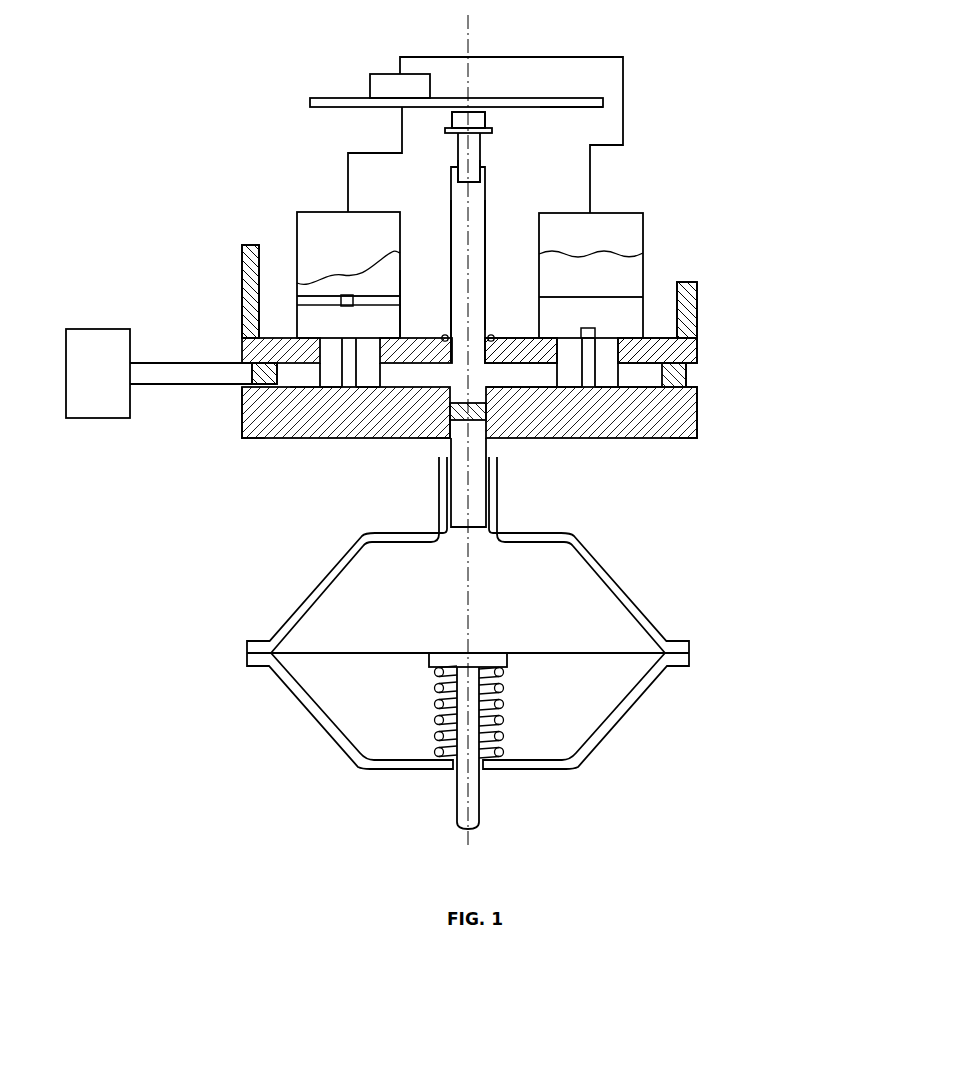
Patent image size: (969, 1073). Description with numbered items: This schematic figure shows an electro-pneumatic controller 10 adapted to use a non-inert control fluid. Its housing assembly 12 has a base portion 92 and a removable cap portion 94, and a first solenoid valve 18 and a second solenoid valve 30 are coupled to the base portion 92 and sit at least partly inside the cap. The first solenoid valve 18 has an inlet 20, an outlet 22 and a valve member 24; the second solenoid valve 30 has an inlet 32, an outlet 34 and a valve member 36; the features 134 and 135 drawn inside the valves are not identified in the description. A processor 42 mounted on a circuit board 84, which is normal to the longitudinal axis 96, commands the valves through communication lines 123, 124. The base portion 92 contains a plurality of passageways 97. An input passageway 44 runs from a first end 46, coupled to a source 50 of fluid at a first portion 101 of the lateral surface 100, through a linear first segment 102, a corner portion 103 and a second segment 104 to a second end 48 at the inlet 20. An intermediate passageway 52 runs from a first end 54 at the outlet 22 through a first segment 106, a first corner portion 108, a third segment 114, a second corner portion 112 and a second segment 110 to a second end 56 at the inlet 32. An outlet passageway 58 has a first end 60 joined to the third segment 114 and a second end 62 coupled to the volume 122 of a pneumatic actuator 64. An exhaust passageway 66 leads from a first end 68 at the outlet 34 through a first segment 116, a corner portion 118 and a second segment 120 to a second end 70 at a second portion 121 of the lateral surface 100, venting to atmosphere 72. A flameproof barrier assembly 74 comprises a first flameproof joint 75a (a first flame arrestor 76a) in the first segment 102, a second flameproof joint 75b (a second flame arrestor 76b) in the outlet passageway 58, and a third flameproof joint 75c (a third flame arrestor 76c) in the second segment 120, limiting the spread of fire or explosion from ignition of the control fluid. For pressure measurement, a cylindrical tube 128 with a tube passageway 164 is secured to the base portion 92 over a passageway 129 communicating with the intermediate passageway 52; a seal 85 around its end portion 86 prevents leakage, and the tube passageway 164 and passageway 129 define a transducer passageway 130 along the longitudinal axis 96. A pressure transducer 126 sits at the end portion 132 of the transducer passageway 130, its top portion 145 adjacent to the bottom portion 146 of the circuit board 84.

The electro-pneumatic controller 10 is at (746, 84).
The housing assembly 12 is at (215, 272).
The first solenoid valve 18 is at (324, 212).
The inlet 20 is at (298, 292).
The outlet 22 is at (370, 336).
The valve member 24 is at (346, 293).
The second solenoid valve 30 is at (605, 212).
The inlet 32 is at (557, 343).
The outlet 34 is at (410, 348).
The valve member 36 is at (570, 347).
The processor 42 is at (385, 74).
The input passageway 44 is at (283, 395).
The first end 46 is at (252, 378).
The second end 48 is at (332, 346).
The source of fluid 50 is at (159, 373).
The intermediate passageway 52 is at (366, 385).
The first end 54 is at (365, 357).
The second end 56 is at (552, 350).
The outlet passageway 58 is at (487, 400).
The first end 60 is at (427, 415).
The second end 62 is at (478, 511).
The pneumatic actuator 64 is at (620, 588).
The exhaust passageway 66 is at (685, 415).
The first end 68 is at (665, 338).
The second end 70 is at (655, 373).
The atmosphere 72 is at (739, 378).
The flameproof barrier assembly 74 is at (243, 440).
The first flameproof joint 75a is at (211, 350).
The first flame arrestor 76a is at (252, 372).
The second flameproof joint 75b is at (402, 471).
The second flame arrestor 76b is at (447, 443).
The third flameproof joint 75c is at (720, 351).
The third flame arrestor 76c is at (683, 352).
The circuit board 84 is at (325, 98).
The seal 85 is at (445, 335).
The end portion 86 is at (452, 290).
The base portion 92 is at (700, 425).
The cap portion 94 is at (688, 296).
The longitudinal axis 96 is at (468, 50).
The plurality of passageways 97 is at (547, 373).
The lateral surface 100 is at (240, 341).
The first portion 101 is at (242, 389).
The first segment 102 is at (305, 390).
The corner portion 103 is at (339, 385).
The second segment 104 is at (335, 385).
The first segment 106 is at (386, 300).
The first corner portion 108 is at (373, 392).
The second segment 110 is at (560, 337).
The second corner portion 112 is at (577, 373).
The third segment 114 is at (521, 361).
The first segment 116 is at (600, 362).
The corner portion 118 is at (612, 372).
The second segment 120 is at (692, 375).
The second portion 121 is at (700, 410).
The volume 122 is at (468, 619).
The communication line 123 is at (402, 130).
The communication line 124 is at (625, 77).
The pressure transducer 126 is at (487, 117).
The cylindrical tube 128 is at (488, 188).
The passageway 129 is at (452, 338).
The transducer passageway 130 is at (482, 253).
The end portion 132 is at (458, 150).
The first fluid level 134 is at (318, 283).
The second fluid level 135 is at (632, 272).
The top portion 145 is at (478, 110).
The bottom portion 146 is at (542, 107).
The tube passageway 164 is at (460, 192).